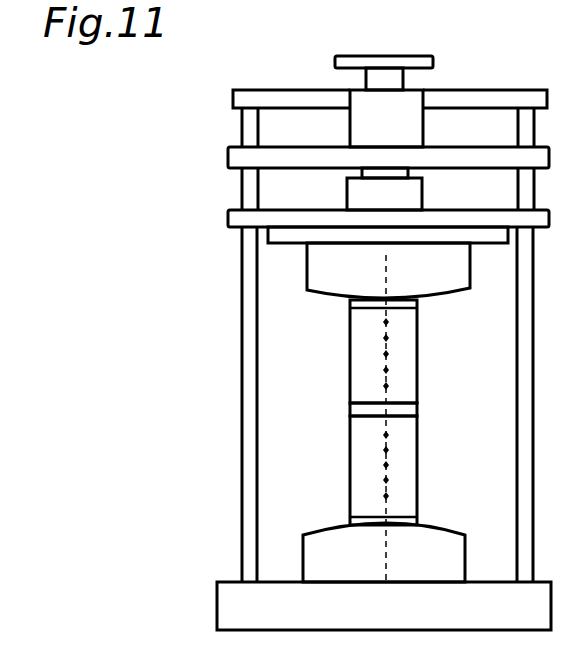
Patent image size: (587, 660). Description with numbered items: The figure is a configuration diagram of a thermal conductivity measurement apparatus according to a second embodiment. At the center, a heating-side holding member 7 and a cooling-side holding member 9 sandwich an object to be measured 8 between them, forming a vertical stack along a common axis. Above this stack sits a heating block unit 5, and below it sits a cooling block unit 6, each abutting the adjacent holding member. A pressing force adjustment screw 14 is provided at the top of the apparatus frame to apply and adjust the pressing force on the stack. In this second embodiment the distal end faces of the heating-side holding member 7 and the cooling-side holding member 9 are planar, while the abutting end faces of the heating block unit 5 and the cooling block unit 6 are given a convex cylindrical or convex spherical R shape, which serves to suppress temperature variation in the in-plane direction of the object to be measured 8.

The pressing force adjustment screw 14 is at (402, 111).
The heating block unit 5 is at (317, 268).
The cooling block unit 6 is at (327, 557).
The heating-side holding member 7 is at (408, 357).
The object to be measured 8 is at (400, 410).
The cooling-side holding member 9 is at (407, 480).